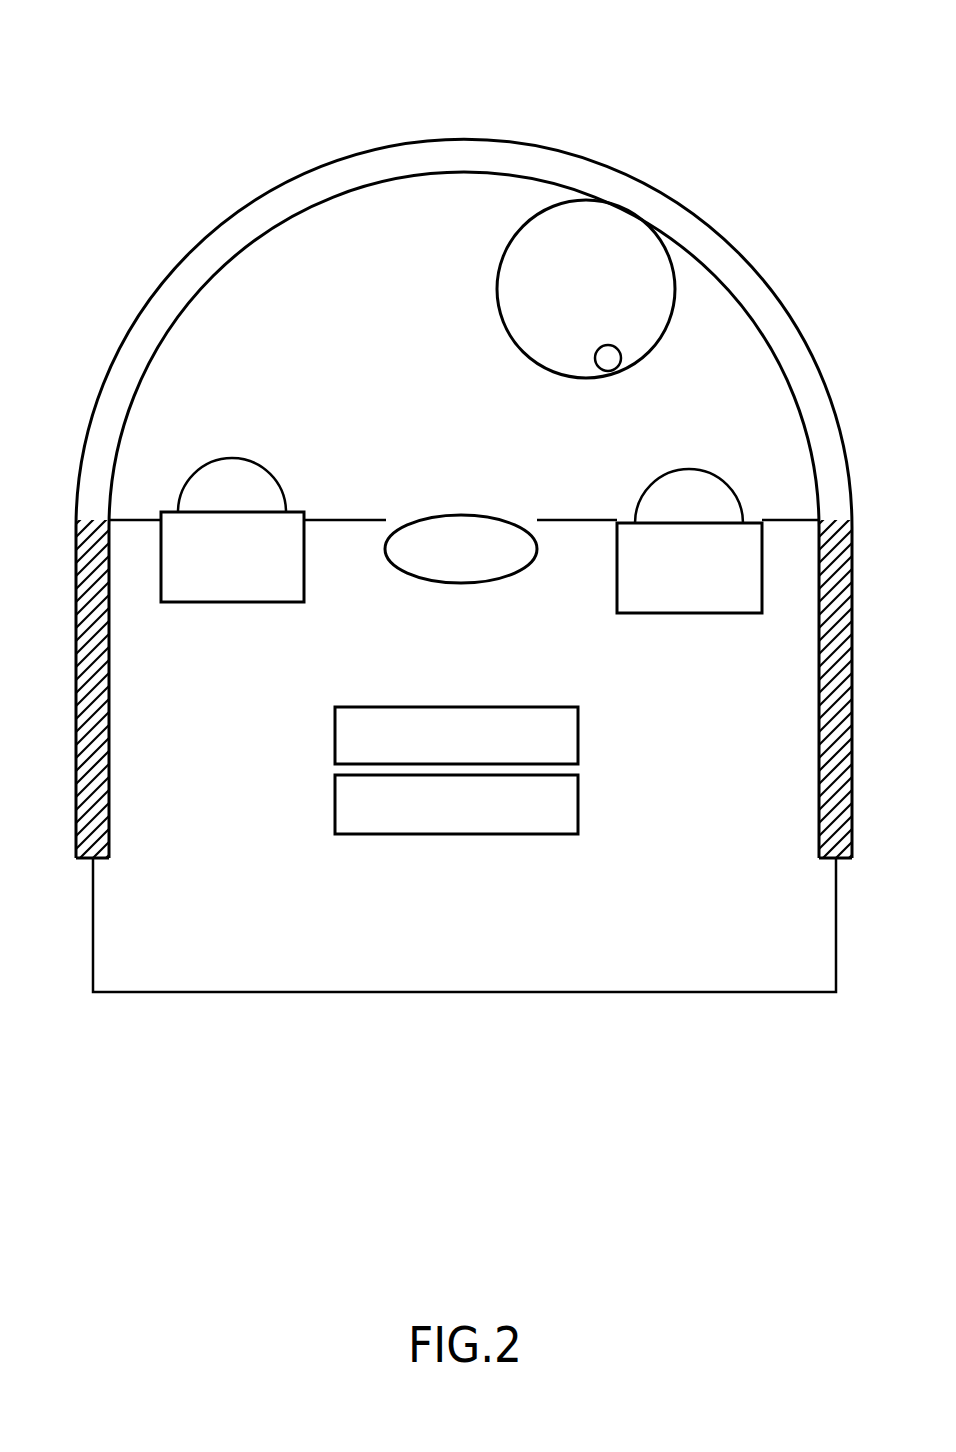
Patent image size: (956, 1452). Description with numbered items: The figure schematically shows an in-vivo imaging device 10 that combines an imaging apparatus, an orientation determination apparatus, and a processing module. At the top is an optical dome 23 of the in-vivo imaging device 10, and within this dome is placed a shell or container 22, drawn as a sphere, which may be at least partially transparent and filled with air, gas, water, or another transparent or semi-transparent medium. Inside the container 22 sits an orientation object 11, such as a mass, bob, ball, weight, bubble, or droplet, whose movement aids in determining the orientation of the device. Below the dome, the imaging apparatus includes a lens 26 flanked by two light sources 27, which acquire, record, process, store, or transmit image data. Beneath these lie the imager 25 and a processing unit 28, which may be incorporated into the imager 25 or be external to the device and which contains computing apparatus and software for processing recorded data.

The in-vivo imaging device 10 is at (156, 78).
The optical dome 23 is at (460, 168).
The container 22 is at (496, 289).
The orientation object 11 is at (608, 358).
The lens 26 is at (460, 515).
The light source 27 is at (232, 603).
The imager 25 is at (578, 732).
The processing unit 28 is at (578, 800).